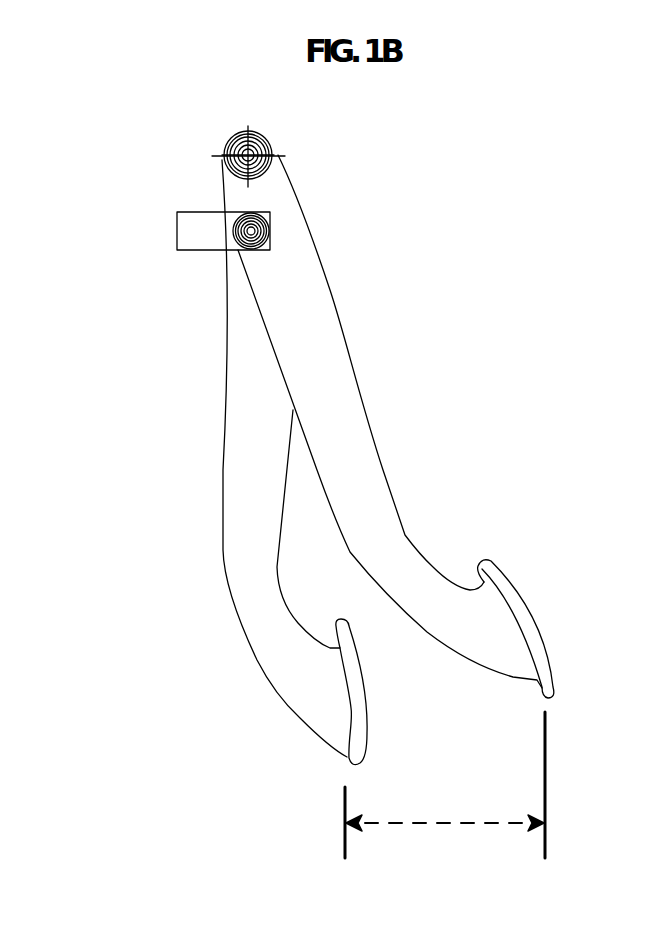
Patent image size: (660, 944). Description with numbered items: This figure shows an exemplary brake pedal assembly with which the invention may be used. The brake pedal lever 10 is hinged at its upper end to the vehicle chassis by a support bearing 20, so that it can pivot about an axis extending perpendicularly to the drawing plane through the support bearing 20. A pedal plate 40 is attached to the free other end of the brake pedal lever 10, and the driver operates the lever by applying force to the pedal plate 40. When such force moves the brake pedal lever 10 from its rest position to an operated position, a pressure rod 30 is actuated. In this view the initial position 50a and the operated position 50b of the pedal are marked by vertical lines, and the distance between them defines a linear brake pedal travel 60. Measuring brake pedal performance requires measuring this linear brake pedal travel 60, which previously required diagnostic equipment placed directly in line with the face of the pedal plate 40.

The brake pedal lever 10 is at (333, 305).
The support bearing 20 is at (228, 152).
The pressure rod 30 is at (180, 228).
The pedal plate 40 is at (512, 583).
The initial position 50a is at (545, 780).
The operated position 50b is at (345, 800).
The linear brake pedal travel 60 is at (398, 828).